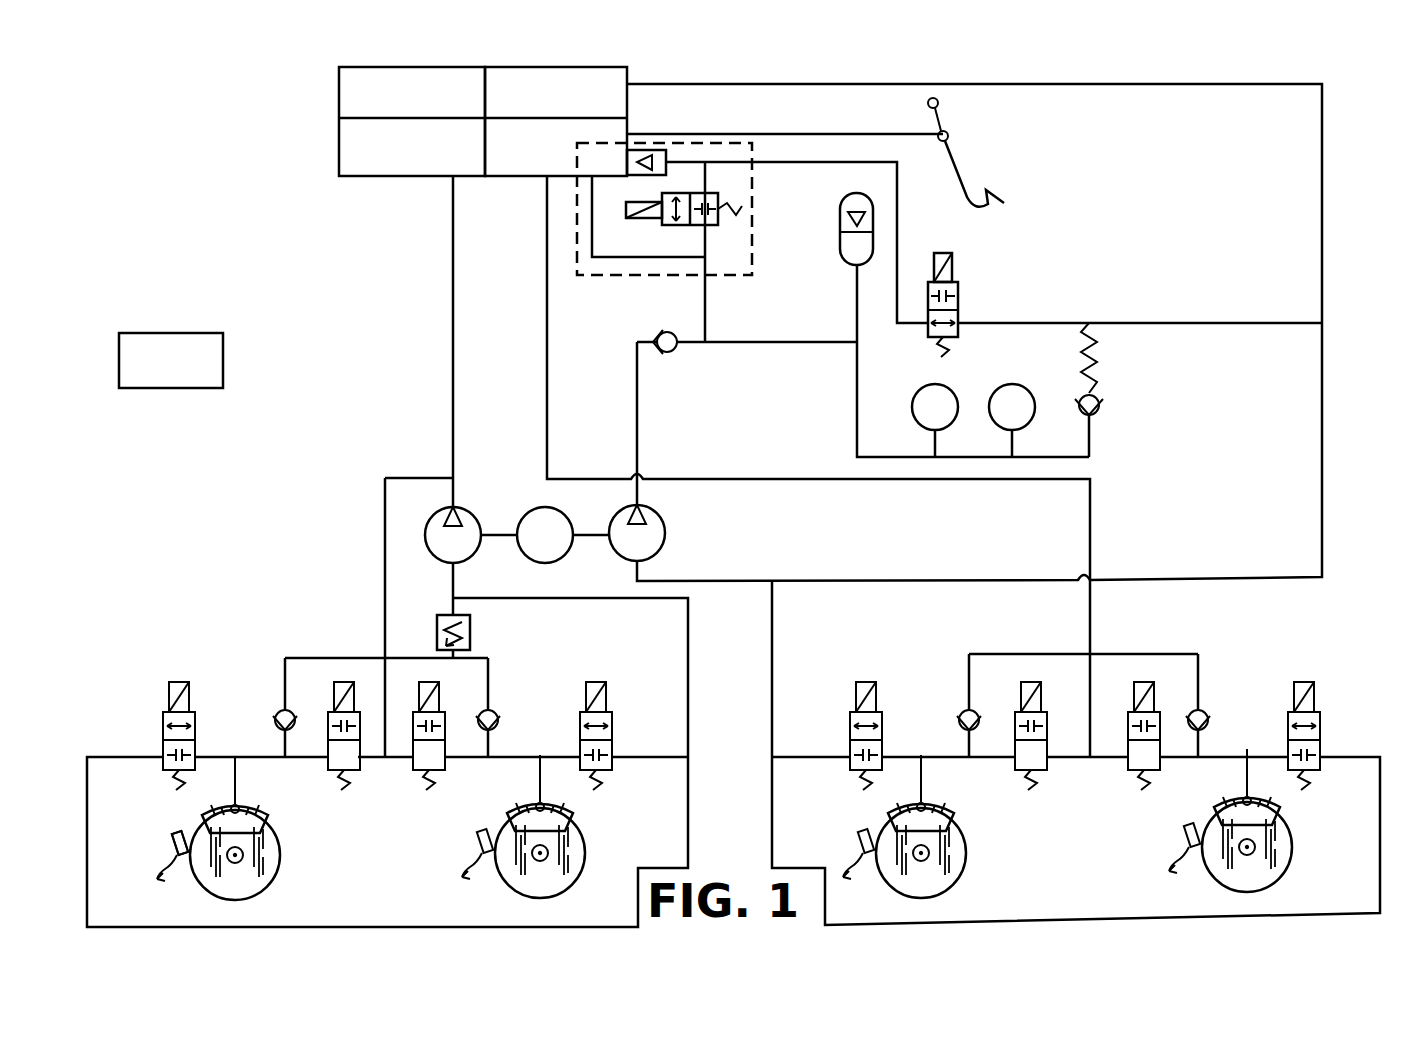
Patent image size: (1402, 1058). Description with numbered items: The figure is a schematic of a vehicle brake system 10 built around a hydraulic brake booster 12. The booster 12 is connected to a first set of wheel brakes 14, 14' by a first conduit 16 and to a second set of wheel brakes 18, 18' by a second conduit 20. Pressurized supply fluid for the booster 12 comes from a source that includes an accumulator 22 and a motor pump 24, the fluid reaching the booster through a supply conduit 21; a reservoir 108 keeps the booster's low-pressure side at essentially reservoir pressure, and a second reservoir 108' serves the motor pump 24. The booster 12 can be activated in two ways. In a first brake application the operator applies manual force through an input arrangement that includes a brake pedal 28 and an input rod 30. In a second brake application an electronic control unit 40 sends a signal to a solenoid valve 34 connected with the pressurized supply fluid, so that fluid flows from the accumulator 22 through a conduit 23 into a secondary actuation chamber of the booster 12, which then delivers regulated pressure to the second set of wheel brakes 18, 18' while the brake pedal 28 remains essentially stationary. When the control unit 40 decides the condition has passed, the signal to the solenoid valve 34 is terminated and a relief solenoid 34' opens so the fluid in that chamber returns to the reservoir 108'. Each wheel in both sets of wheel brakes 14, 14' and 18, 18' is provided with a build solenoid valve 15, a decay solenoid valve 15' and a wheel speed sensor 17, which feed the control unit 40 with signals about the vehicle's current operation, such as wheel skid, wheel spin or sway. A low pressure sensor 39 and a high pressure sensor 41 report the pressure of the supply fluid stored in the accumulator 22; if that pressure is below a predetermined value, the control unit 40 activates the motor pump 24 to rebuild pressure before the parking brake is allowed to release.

The brake system 10 is at (392, 208).
The hydraulic brake booster 12 is at (752, 78).
The reservoir 108 is at (373, 121).
The reservoir for the motor pump 108' is at (596, 115).
The wheel brake 14 is at (387, 762).
The wheel brake 14' is at (541, 832).
The build solenoid valve 15 is at (735, 724).
The decay solenoid valve 15' is at (735, 713).
The first conduit 16 is at (453, 293).
The wheel speed sensor 17 is at (175, 836).
The wheel brake 18 is at (1076, 753).
The wheel brake 18' is at (1257, 825).
The second conduit 20 is at (547, 360).
The supply conduit 21 is at (635, 257).
The accumulator 22 is at (840, 210).
The conduit 23 is at (722, 178).
The motor pump 24 is at (521, 517).
The brake pedal 28 is at (956, 164).
The input rod 30 is at (786, 133).
The solenoid valve 34 is at (684, 229).
The relief solenoid 34' is at (1125, 305).
The low pressure sensor 39 is at (933, 443).
The electronic control unit 40 is at (142, 340).
The high pressure sensor 41 is at (1014, 445).